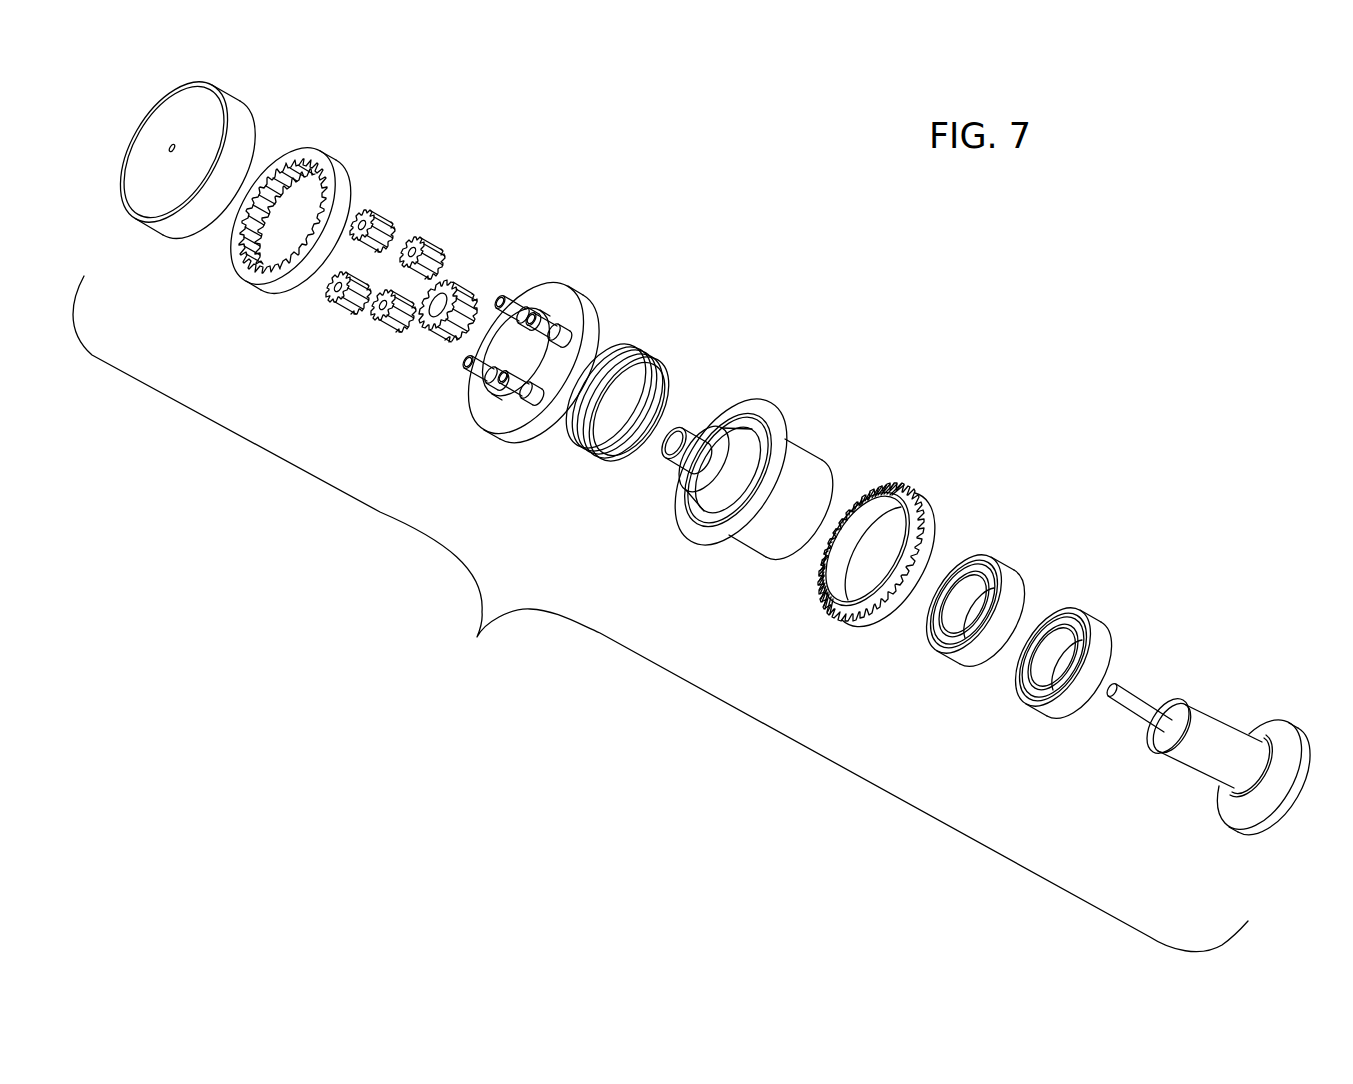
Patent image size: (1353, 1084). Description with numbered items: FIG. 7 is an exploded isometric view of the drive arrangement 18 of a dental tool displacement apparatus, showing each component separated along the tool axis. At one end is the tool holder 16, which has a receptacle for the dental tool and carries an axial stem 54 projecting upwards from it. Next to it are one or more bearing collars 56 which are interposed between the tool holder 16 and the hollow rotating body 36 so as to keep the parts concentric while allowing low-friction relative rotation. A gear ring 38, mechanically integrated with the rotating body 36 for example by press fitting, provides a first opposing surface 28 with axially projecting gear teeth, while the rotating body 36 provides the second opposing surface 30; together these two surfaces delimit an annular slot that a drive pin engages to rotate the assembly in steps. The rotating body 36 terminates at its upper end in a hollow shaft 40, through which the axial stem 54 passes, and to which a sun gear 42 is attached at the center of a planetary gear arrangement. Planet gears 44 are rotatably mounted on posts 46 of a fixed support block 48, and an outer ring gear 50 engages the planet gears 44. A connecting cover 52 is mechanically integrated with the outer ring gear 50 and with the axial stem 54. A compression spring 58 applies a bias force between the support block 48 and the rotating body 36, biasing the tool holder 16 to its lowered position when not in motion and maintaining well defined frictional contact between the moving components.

The drive arrangement 18 is at (660, 614).
The connecting cover 52 is at (173, 238).
The outer ring gear 50 is at (258, 277).
The planet gears 44 is at (385, 208).
The sun gear 42 is at (470, 277).
The support block 48 is at (590, 323).
The posts 46 is at (540, 323).
The compression spring 58 is at (653, 360).
The hollow shaft 40 is at (693, 427).
The rotating body 36 is at (740, 447).
The second opposing surface 30 is at (787, 440).
The first opposing surface 28 is at (875, 482).
The gear ring 38 is at (935, 515).
The bearing collar 56 is at (1012, 587).
The axial stem 54 is at (1147, 702).
The tool holder 16 is at (1243, 727).